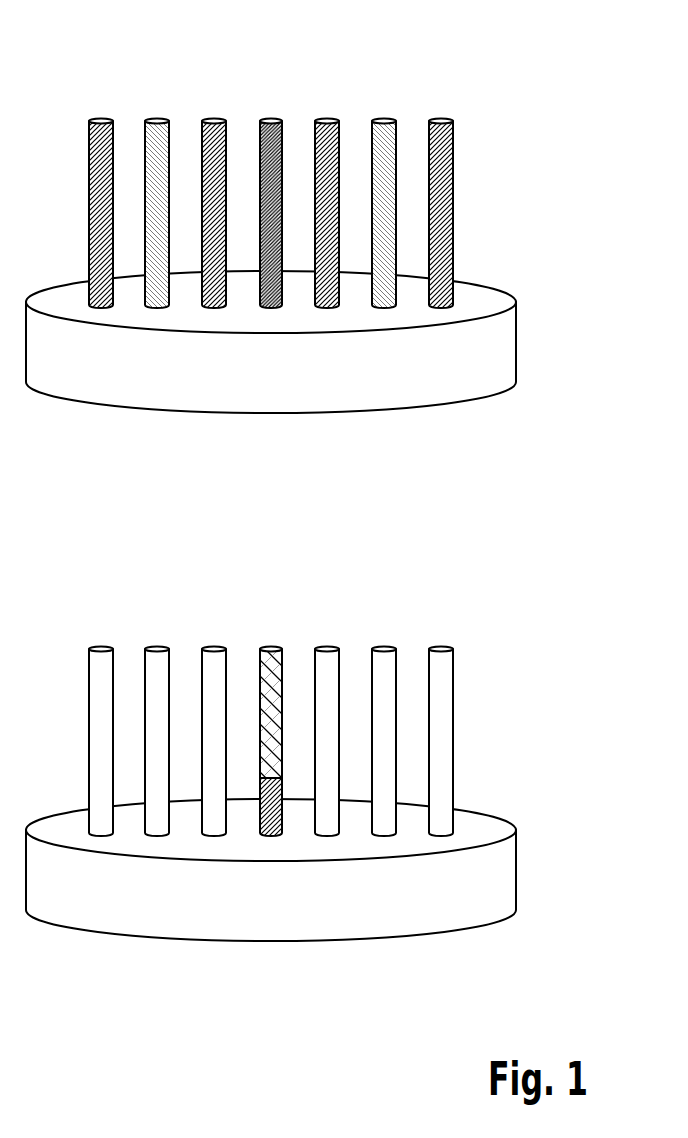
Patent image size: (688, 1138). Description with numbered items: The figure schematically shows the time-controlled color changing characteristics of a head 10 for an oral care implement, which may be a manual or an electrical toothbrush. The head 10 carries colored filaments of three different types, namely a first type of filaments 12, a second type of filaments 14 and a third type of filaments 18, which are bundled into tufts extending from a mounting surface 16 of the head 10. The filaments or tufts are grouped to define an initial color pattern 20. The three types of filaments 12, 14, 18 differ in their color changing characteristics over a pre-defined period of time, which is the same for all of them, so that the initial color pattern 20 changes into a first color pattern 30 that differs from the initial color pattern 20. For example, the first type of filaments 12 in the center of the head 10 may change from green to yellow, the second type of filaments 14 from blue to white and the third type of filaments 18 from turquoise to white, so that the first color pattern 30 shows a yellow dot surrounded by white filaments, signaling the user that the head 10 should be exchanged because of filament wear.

The head 10 is at (512, 163).
The first type of filaments 12 is at (270, 130).
The second type of filaments 14 is at (100, 130).
The mounting surface 16 is at (498, 345).
The third type of filaments 18 is at (156, 130).
The initial color pattern 20 is at (475, 268).
The first color pattern 30 is at (475, 796).